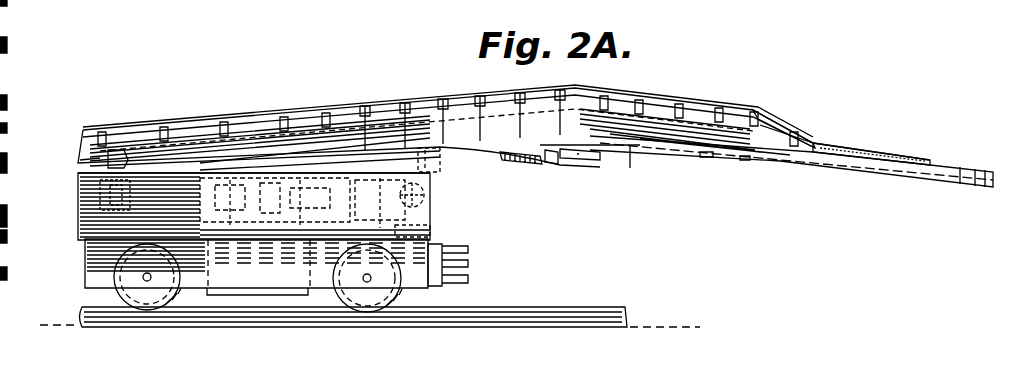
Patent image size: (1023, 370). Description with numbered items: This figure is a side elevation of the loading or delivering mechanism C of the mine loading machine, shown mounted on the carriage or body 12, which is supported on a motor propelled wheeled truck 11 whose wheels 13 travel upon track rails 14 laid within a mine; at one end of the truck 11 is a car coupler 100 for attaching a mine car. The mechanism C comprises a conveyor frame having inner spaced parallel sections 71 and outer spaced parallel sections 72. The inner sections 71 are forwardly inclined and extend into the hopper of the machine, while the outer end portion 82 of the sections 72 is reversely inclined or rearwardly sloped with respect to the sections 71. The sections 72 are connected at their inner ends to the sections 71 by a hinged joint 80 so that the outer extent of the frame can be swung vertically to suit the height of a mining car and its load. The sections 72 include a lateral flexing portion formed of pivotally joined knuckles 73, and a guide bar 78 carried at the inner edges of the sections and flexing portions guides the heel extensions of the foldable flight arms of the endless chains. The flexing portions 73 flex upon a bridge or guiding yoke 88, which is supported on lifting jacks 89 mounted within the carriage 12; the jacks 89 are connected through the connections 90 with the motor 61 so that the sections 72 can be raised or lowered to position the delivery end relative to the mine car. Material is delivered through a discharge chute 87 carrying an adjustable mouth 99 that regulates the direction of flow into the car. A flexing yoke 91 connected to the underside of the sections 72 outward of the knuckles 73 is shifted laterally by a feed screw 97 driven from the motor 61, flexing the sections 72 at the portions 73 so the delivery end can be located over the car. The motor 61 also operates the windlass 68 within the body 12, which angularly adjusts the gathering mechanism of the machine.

The loading or delivering mechanism C is at (297, 122).
The pivotally joined knuckles 73 is at (466, 128).
The outer spaced parallel sections 72 is at (770, 142).
The guide bar 78 is at (861, 150).
The outer end portion 82 is at (790, 162).
The flexing yoke 91 is at (630, 155).
The adjustable mouth 99 is at (581, 167).
The bridge or guiding yoke 88 is at (530, 163).
The discharge chute 87 is at (555, 165).
The lifting jacks 89 is at (440, 174).
The hinged joint 80 is at (122, 143).
The inner spaced parallel sections 71 is at (94, 159).
The feed screw 97 is at (80, 173).
The carriage or body 12 is at (78, 186).
The windlass 68 is at (310, 192).
The motor 61 is at (428, 208).
The connections 90 is at (432, 229).
The truck 11 is at (318, 282).
The wheels 13 is at (116, 296).
The car coupler 100 is at (470, 263).
The track rails 14 is at (521, 307).